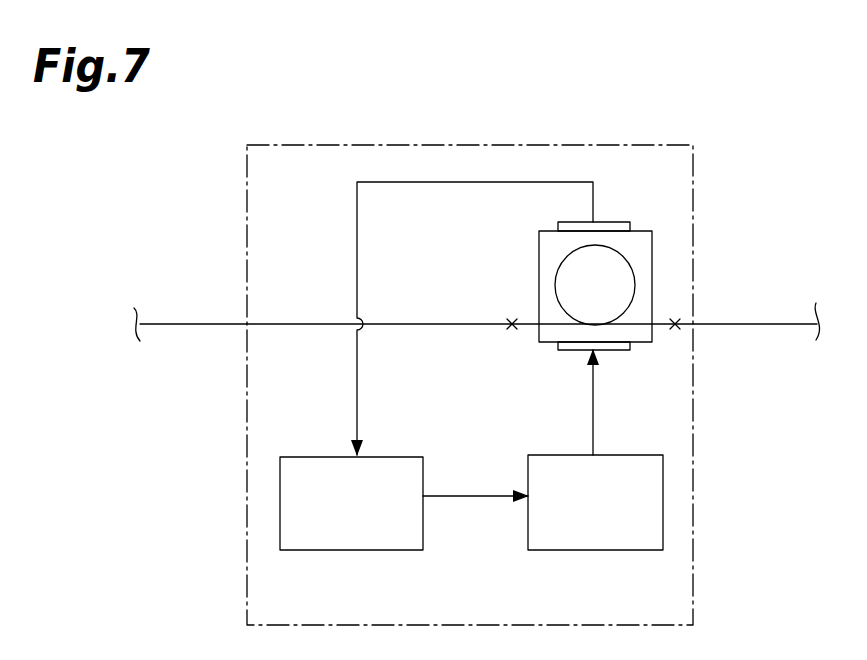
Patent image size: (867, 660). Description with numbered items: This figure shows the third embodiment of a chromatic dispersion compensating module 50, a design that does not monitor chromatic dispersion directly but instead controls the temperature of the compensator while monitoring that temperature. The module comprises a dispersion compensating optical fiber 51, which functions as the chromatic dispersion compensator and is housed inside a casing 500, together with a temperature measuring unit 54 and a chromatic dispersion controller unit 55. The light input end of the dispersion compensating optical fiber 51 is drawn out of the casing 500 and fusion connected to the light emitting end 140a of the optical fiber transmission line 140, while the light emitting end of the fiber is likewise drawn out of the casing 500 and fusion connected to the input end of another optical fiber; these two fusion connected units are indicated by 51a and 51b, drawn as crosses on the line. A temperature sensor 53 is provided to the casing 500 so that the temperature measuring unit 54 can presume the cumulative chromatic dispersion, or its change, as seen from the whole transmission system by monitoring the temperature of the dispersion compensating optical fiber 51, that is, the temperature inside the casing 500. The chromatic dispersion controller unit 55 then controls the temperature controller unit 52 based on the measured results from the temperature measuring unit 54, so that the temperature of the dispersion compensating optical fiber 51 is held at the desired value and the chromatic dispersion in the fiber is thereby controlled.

The chromatic dispersion compensating module 50 is at (490, 145).
The optical fiber transmission line 140 is at (187, 324).
The light emitting end of the optical fiber transmission line 140a is at (510, 325).
The dispersion compensating optical fiber 51 is at (620, 255).
The fusion connected unit 51a is at (511, 320).
The fusion connected unit 51b is at (675, 321).
The temperature controller unit 52 is at (605, 351).
The temperature sensor 53 is at (600, 223).
The temperature measuring unit 54 is at (348, 551).
The chromatic dispersion controller unit 55 is at (585, 551).
The casing 500 is at (653, 284).